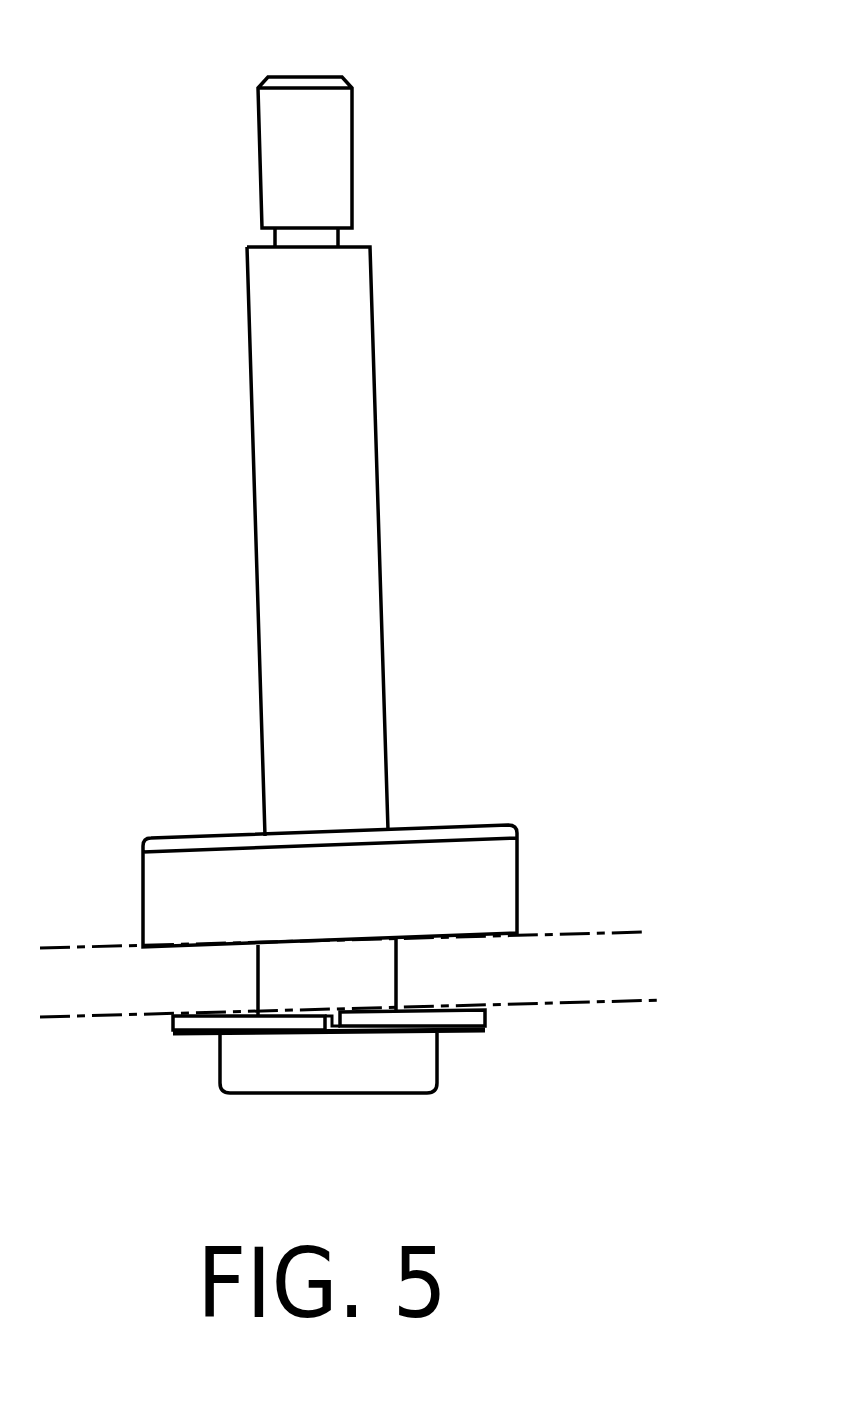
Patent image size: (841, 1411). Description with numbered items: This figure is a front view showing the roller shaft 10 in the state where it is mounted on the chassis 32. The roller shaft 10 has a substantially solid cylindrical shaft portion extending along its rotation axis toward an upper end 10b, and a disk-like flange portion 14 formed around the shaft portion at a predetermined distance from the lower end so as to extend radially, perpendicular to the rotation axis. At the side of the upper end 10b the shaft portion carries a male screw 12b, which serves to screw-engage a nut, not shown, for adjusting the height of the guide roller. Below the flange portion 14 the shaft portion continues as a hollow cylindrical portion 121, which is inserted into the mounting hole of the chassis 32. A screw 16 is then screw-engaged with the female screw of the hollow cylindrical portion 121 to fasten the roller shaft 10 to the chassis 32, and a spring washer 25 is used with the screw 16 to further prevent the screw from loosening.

The roller shaft 10 is at (394, 419).
The upper end 10b is at (312, 73).
The male screw 12b is at (353, 185).
The flange portion 14 is at (482, 875).
The hollow cylindrical portion 121 is at (377, 988).
The chassis 32 is at (127, 973).
The spring washer 25 is at (178, 1038).
The screw 16 is at (372, 1095).